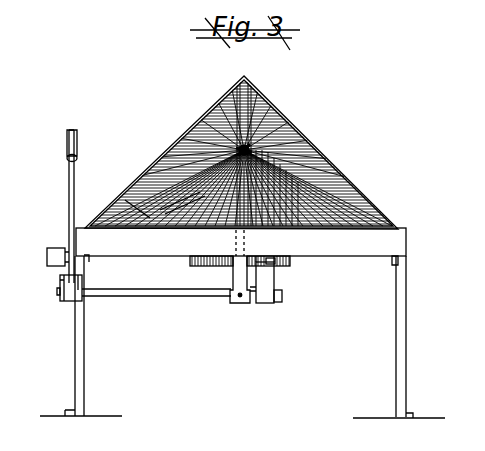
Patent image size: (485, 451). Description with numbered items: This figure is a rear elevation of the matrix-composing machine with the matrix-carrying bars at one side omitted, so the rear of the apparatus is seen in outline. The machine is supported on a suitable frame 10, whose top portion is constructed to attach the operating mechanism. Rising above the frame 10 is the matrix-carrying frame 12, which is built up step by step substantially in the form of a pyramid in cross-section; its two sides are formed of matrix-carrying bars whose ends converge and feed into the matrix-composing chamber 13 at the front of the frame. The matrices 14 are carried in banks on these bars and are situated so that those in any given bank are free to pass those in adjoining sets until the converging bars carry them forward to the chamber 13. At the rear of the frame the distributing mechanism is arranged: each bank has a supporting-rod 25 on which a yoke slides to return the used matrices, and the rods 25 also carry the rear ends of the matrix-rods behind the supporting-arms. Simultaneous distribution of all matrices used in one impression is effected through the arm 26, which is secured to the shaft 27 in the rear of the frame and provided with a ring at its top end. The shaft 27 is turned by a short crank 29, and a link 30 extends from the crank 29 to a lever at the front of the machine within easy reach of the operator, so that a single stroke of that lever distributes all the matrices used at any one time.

The frame 10 is at (242, 323).
The matrix-carrying frame 12 is at (207, 110).
The matrix-composing chamber 13 is at (182, 206).
The matrices 14 is at (200, 270).
The supporting-rod 25 is at (151, 219).
The arm 26 is at (245, 226).
The shaft 27 is at (193, 293).
The crank 29 is at (62, 279).
The link 30 is at (58, 264).